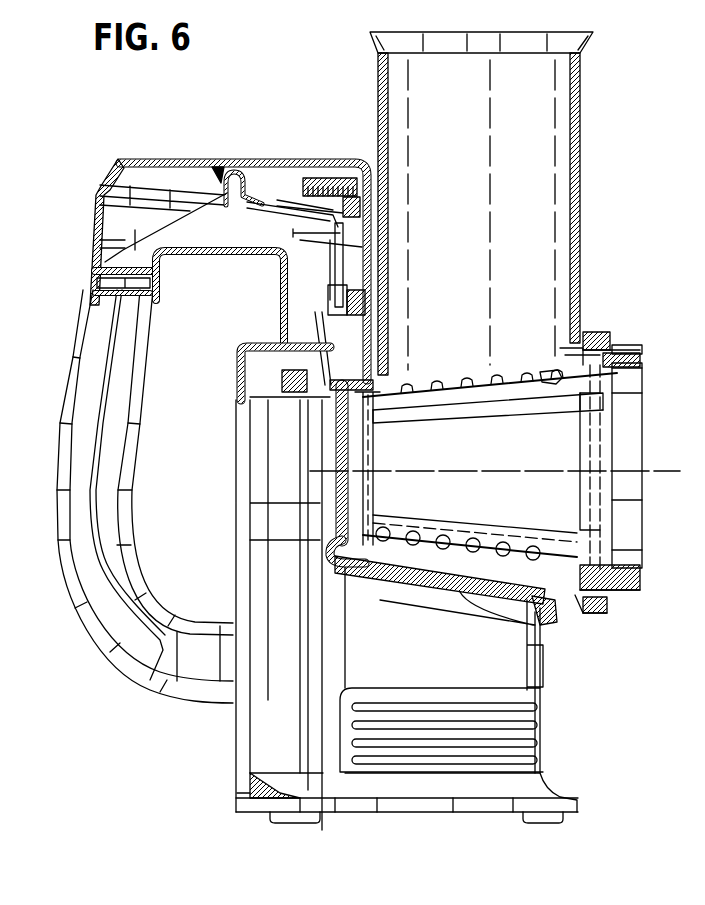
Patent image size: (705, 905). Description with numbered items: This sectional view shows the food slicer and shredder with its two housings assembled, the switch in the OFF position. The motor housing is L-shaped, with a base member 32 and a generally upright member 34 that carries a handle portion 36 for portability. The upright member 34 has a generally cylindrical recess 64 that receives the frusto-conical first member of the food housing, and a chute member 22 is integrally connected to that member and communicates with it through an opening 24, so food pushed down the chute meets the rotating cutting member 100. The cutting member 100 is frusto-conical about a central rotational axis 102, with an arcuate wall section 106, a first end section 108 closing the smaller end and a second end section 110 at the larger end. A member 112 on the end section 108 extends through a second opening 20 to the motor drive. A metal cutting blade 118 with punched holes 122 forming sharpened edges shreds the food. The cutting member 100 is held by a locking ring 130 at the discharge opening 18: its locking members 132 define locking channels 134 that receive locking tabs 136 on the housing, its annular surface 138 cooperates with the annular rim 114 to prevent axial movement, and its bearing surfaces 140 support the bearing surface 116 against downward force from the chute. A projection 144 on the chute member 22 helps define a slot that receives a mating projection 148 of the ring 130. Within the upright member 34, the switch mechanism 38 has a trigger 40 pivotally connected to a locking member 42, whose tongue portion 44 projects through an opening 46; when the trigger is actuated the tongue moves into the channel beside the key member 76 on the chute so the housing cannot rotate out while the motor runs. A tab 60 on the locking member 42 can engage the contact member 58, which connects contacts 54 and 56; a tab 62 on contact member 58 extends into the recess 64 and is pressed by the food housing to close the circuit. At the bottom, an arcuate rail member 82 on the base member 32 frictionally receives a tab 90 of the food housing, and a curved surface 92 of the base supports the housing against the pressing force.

The opening 18 is at (687, 417).
The second opening 20 is at (330, 447).
The chute member 22 is at (582, 125).
The opening 24 is at (478, 356).
The base member 32 is at (546, 738).
The upright member 34 is at (237, 462).
The handle portion 36 is at (148, 160).
The switch mechanism 38 is at (215, 165).
The trigger 40 is at (167, 223).
The locking member 42 is at (262, 198).
The tongue portion 44 is at (362, 247).
The opening 46 is at (377, 220).
The electrical contact 54 is at (317, 327).
The contact 56 is at (350, 268).
The contact member 58 is at (335, 262).
The tab 60 is at (322, 228).
The tab 62 is at (388, 358).
The cylindrical recess 64 is at (357, 393).
The key member 76 is at (388, 213).
The arcuate rail member 82 is at (547, 600).
The tab 90 is at (550, 600).
The surface 92 is at (460, 585).
The cutting member 100 is at (623, 511).
The central rotational axis 102 is at (527, 471).
The arcuate wall section 106 is at (480, 506).
The first end section 108 is at (318, 533).
The second end section 110 is at (643, 383).
The member 112 is at (317, 497).
The annular rim 114 is at (580, 357).
The bearing surface 116 is at (610, 567).
The cutting blade 118 is at (547, 413).
The holes 122 is at (578, 357).
The locking-retaining ring 130 is at (627, 341).
The locking members 132 is at (607, 610).
The locking channels 134 is at (607, 600).
The locking tabs 136 is at (633, 350).
The annular surface 138 is at (642, 358).
The bearing surfaces 140 is at (640, 582).
The projection 144 is at (583, 332).
The mating projection 148 is at (613, 332).